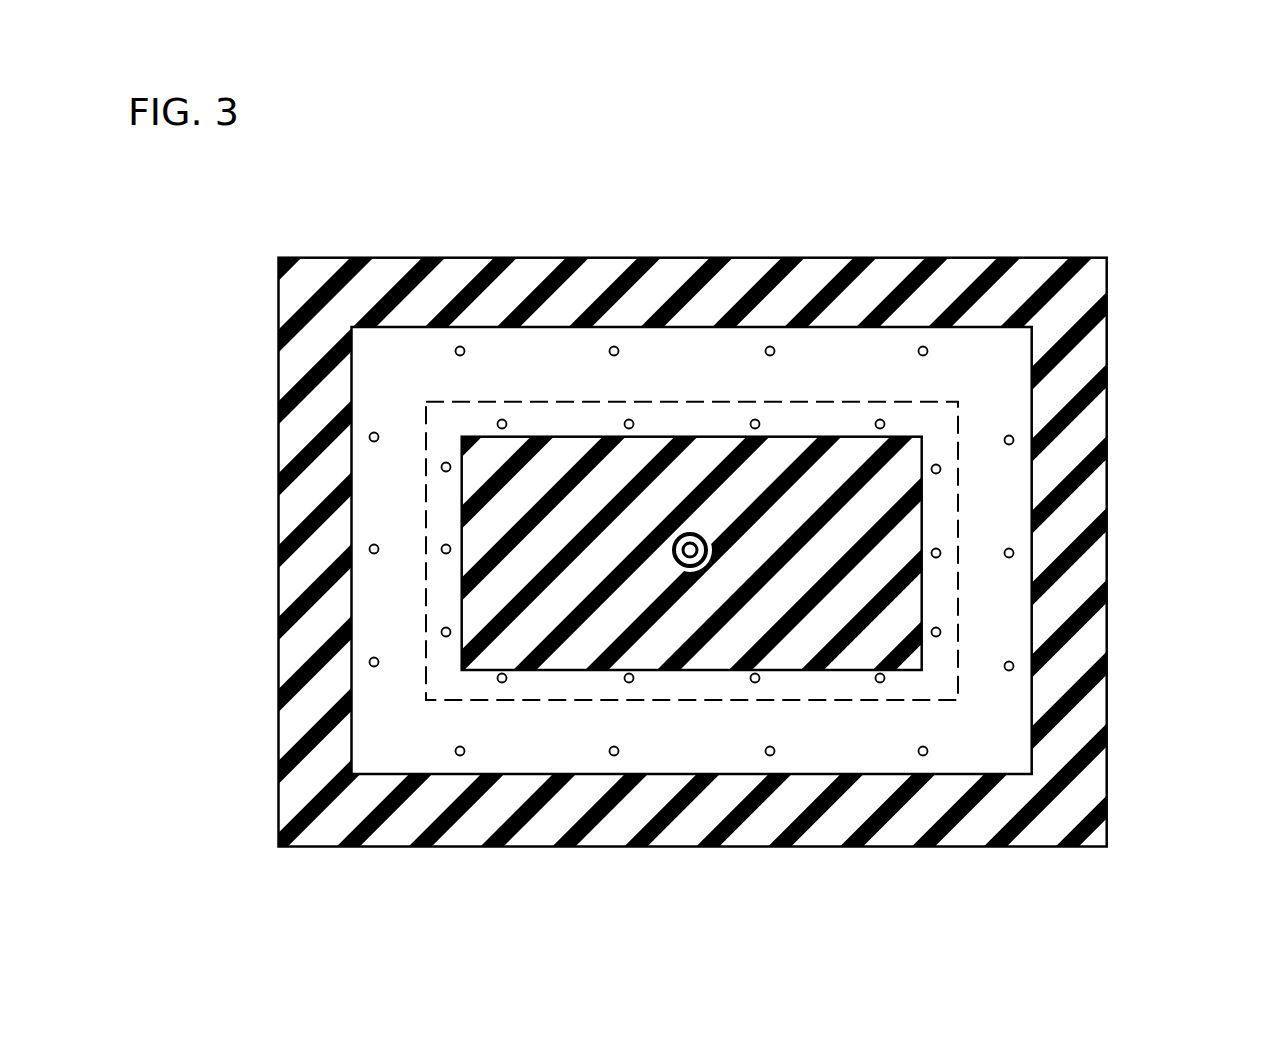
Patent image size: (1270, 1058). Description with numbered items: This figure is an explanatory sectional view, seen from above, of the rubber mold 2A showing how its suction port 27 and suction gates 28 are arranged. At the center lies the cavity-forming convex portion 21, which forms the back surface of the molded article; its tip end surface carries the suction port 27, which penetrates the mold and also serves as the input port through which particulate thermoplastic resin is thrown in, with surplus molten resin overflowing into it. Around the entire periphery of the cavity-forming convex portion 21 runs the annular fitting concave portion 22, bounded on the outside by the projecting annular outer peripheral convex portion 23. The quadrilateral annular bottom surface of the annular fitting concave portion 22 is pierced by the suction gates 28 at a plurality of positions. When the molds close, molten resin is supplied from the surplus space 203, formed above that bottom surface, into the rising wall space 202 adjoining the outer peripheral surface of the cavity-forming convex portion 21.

The rubber mold 2A is at (635, 555).
The cavity-forming convex portion 21 is at (795, 508).
The annular fitting concave portion 22 is at (999, 604).
The annular outer peripheral convex portion 23 is at (1062, 670).
The suction port 27 is at (689, 548).
The suction gates 28 is at (369, 437).
The rising wall space 202 is at (938, 504).
The surplus space 203 is at (990, 739).